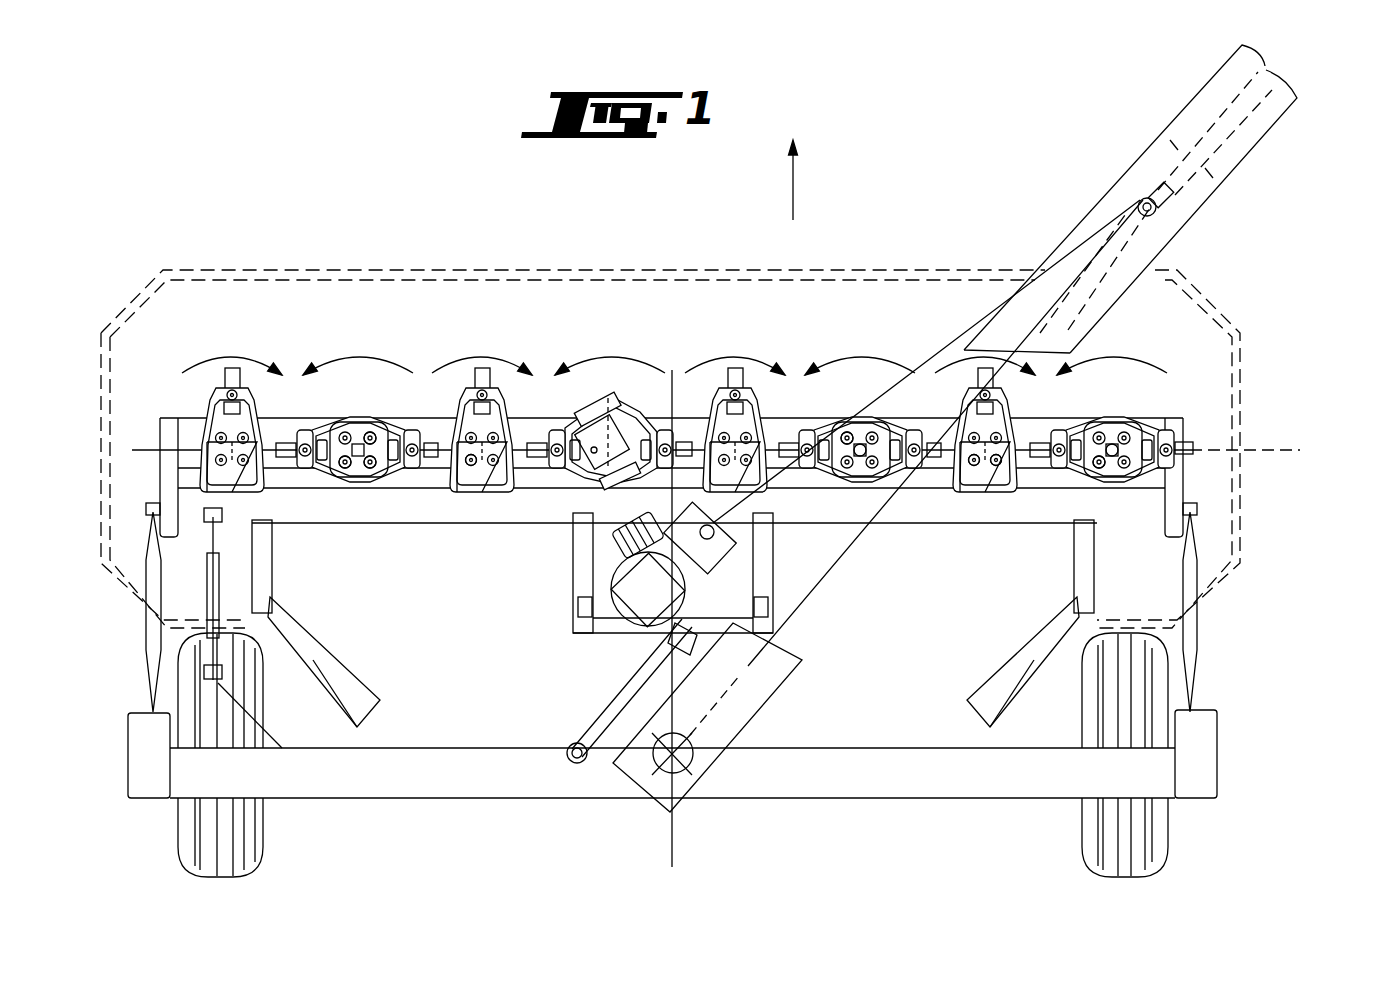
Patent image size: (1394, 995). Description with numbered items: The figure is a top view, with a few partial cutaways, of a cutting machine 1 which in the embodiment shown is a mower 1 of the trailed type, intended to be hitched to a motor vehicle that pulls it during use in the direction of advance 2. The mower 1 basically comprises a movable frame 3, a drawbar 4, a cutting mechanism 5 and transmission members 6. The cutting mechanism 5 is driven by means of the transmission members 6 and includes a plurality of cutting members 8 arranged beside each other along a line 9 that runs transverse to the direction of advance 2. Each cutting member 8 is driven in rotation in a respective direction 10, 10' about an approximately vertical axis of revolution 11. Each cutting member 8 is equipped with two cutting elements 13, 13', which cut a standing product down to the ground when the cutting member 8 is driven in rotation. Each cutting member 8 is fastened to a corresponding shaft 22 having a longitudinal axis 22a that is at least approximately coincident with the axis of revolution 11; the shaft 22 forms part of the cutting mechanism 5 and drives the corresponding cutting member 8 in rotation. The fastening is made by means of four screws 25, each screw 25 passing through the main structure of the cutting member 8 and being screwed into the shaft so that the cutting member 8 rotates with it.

The cutting machine 1 is at (412, 260).
The direction of advance 2 is at (794, 188).
The movable frame 3 is at (418, 810).
The drawbar 4 is at (1179, 92).
The cutting mechanism 5 is at (1186, 407).
The transmission members 6 is at (623, 636).
The cutting member 8 is at (337, 418).
The line 9 is at (1303, 448).
The direction of rotation 10 is at (608, 344).
The direction of rotation 10' is at (737, 340).
The axis of revolution 11 is at (368, 435).
The cutting element 13 is at (663, 509).
The cutting element 13' is at (986, 392).
The shaft 22 is at (370, 458).
The longitudinal axis 22a is at (350, 462).
The screw 25 is at (470, 466).